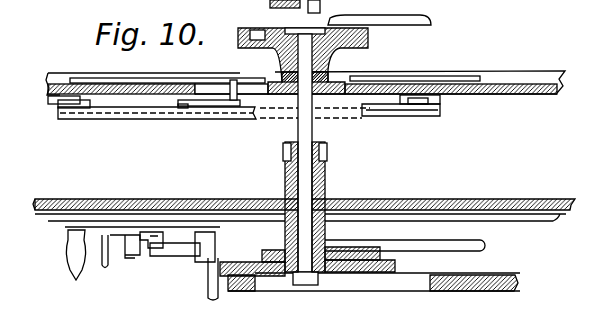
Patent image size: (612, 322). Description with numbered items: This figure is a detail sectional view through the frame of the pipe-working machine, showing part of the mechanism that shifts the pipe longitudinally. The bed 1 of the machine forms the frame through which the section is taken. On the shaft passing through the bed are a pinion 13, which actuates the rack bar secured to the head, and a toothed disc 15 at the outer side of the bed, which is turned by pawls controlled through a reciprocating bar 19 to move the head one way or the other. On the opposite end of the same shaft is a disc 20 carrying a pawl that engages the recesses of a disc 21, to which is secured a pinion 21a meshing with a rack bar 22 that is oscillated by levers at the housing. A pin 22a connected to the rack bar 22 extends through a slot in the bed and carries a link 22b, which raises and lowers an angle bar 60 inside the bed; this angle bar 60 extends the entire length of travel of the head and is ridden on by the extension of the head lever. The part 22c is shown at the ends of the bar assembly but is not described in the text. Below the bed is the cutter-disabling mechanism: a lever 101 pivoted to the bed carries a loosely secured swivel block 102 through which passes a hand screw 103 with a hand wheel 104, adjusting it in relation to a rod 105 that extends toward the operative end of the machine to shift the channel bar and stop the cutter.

The bed 1 is at (510, 84).
The pinion 13 is at (328, 150).
The toothed disc 15 is at (226, 285).
The reciprocating bar 19 is at (298, 131).
The disc 20 is at (245, 28).
The disc 21 is at (370, 42).
The pinion 21a is at (335, 68).
The rack bar 22 is at (147, 78).
The pin 22a is at (245, 100).
The link 22b is at (200, 106).
The end block 22c is at (52, 107).
The angle bar 60 is at (249, 127).
The lever 101 is at (68, 270).
The swivel block 102 is at (130, 255).
The hand screw 103 is at (143, 238).
The hand wheel 104 is at (115, 262).
The rod 105 is at (183, 253).